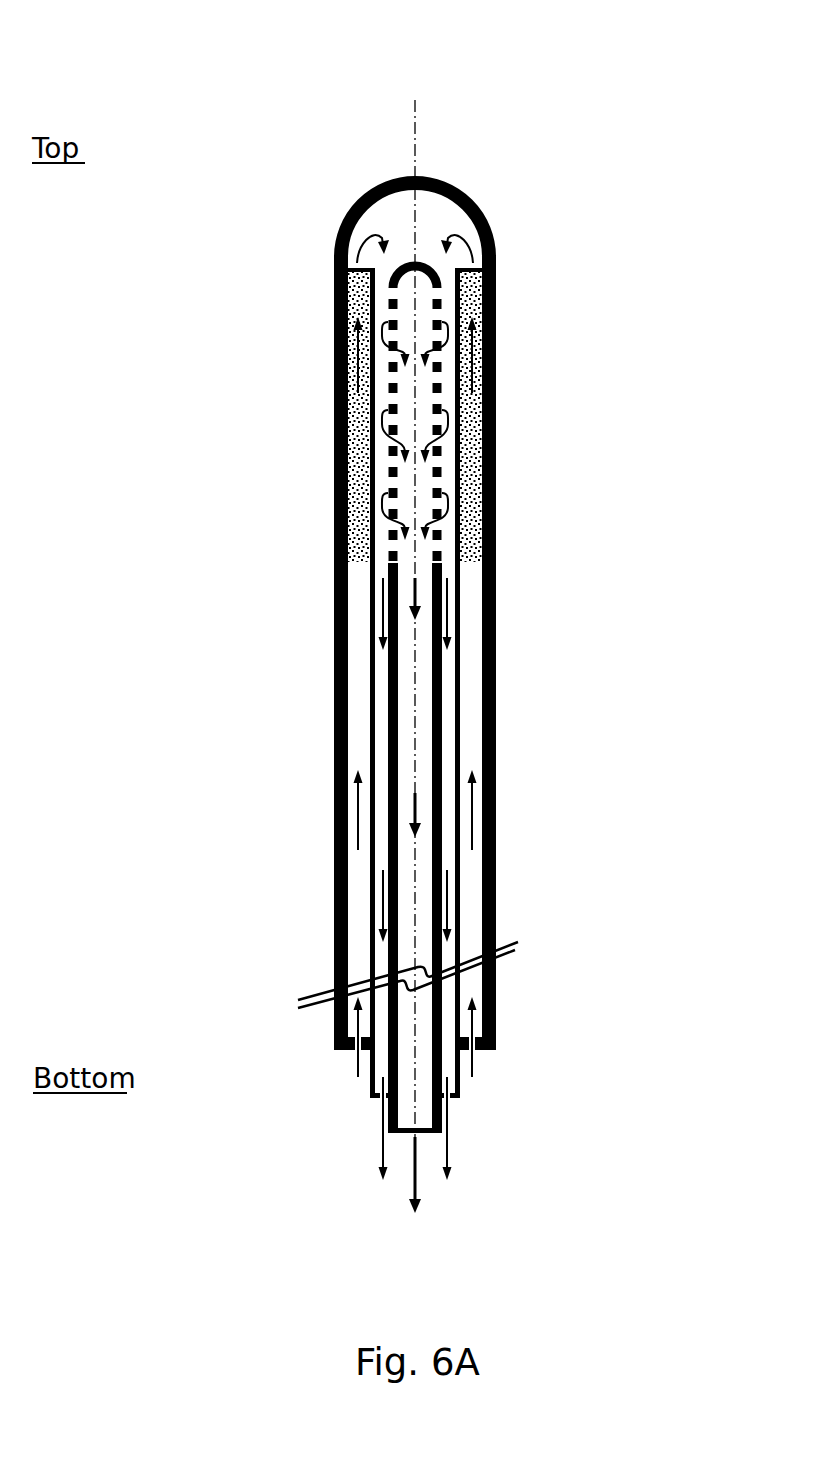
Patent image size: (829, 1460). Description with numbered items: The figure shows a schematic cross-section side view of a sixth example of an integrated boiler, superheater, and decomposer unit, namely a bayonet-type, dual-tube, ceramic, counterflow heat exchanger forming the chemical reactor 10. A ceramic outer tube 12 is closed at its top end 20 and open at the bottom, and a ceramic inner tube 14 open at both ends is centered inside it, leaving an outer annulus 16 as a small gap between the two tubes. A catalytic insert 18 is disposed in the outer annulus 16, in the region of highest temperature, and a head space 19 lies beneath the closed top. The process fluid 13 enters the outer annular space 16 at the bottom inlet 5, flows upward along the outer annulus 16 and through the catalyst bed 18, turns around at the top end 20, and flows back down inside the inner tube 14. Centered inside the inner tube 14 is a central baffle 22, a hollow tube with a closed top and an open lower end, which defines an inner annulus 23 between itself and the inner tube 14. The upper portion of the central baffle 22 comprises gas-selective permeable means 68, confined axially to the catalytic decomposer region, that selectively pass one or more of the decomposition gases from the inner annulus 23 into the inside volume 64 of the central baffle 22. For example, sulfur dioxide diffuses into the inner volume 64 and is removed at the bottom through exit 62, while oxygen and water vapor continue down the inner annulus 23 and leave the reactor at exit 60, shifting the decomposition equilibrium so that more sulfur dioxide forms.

The chemical reactor 10 is at (248, 47).
The outer tube 12 is at (330, 707).
The process fluid 13 is at (352, 804).
The inner tube 14 is at (370, 888).
The outer annulus 16 is at (357, 627).
The catalytic insert 18 is at (358, 496).
The head space 19 is at (392, 217).
The top end 20 is at (470, 187).
The central baffle 22 is at (443, 680).
The inner annulus 23 is at (447, 733).
The inside volume 64 is at (427, 715).
The gas-selective permeable means 68 is at (442, 470).
The bottom inlet 5 is at (423, 1054).
The exit 60 is at (416, 1136).
The exit 62 is at (417, 1190).